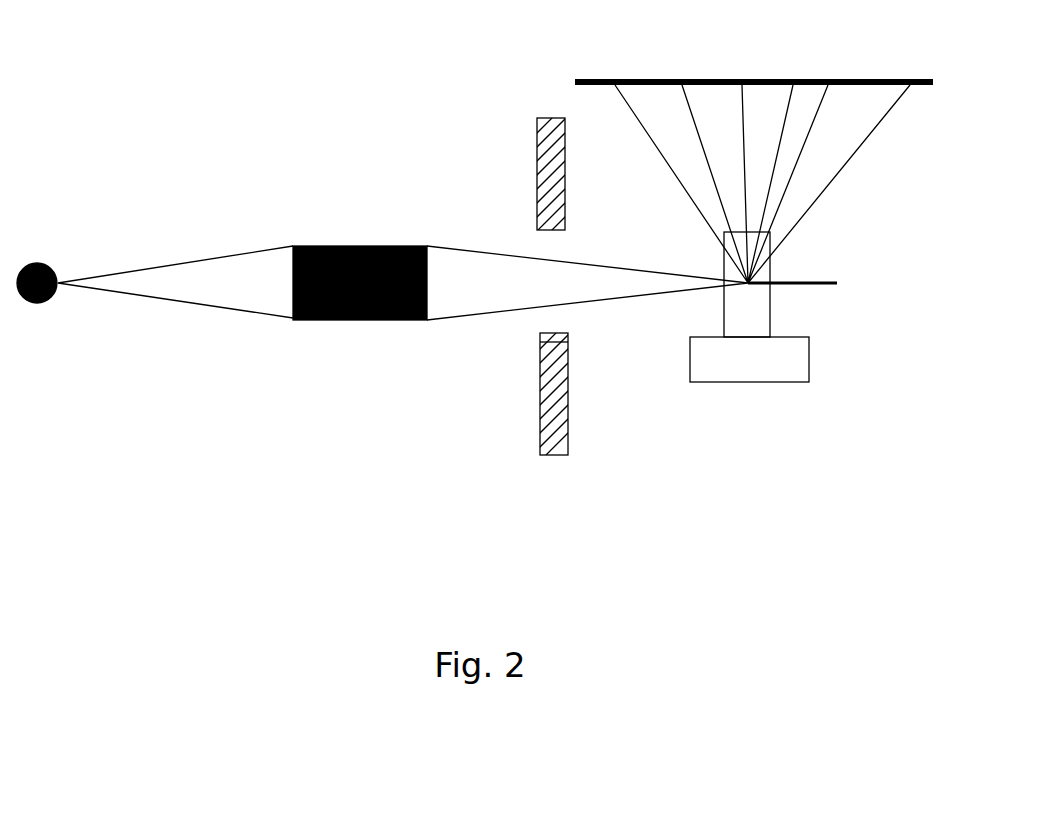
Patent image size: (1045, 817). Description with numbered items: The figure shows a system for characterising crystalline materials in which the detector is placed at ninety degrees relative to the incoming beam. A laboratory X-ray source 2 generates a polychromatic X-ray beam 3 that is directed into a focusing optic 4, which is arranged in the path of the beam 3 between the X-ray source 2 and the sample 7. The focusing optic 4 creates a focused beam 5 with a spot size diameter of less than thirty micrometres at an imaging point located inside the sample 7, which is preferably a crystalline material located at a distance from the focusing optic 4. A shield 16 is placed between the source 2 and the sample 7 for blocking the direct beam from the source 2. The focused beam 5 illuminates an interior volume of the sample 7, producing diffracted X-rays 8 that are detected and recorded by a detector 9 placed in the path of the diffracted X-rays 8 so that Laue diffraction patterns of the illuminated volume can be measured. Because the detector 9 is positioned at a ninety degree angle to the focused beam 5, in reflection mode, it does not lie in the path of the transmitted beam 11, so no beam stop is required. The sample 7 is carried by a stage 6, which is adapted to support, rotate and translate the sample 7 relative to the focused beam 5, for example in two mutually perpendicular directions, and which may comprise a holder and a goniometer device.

The laboratory X-ray source 2 is at (44, 264).
The polychromatic X-ray beam 3 is at (226, 255).
The focusing optic 4 is at (368, 245).
The focused beam 5 is at (477, 252).
The shield 16 is at (545, 118).
The detector 9 is at (585, 78).
The diffracted X-rays 8 is at (669, 172).
The sample 7 is at (725, 300).
The transmitted beam 11 is at (782, 282).
The stage 6 is at (760, 382).